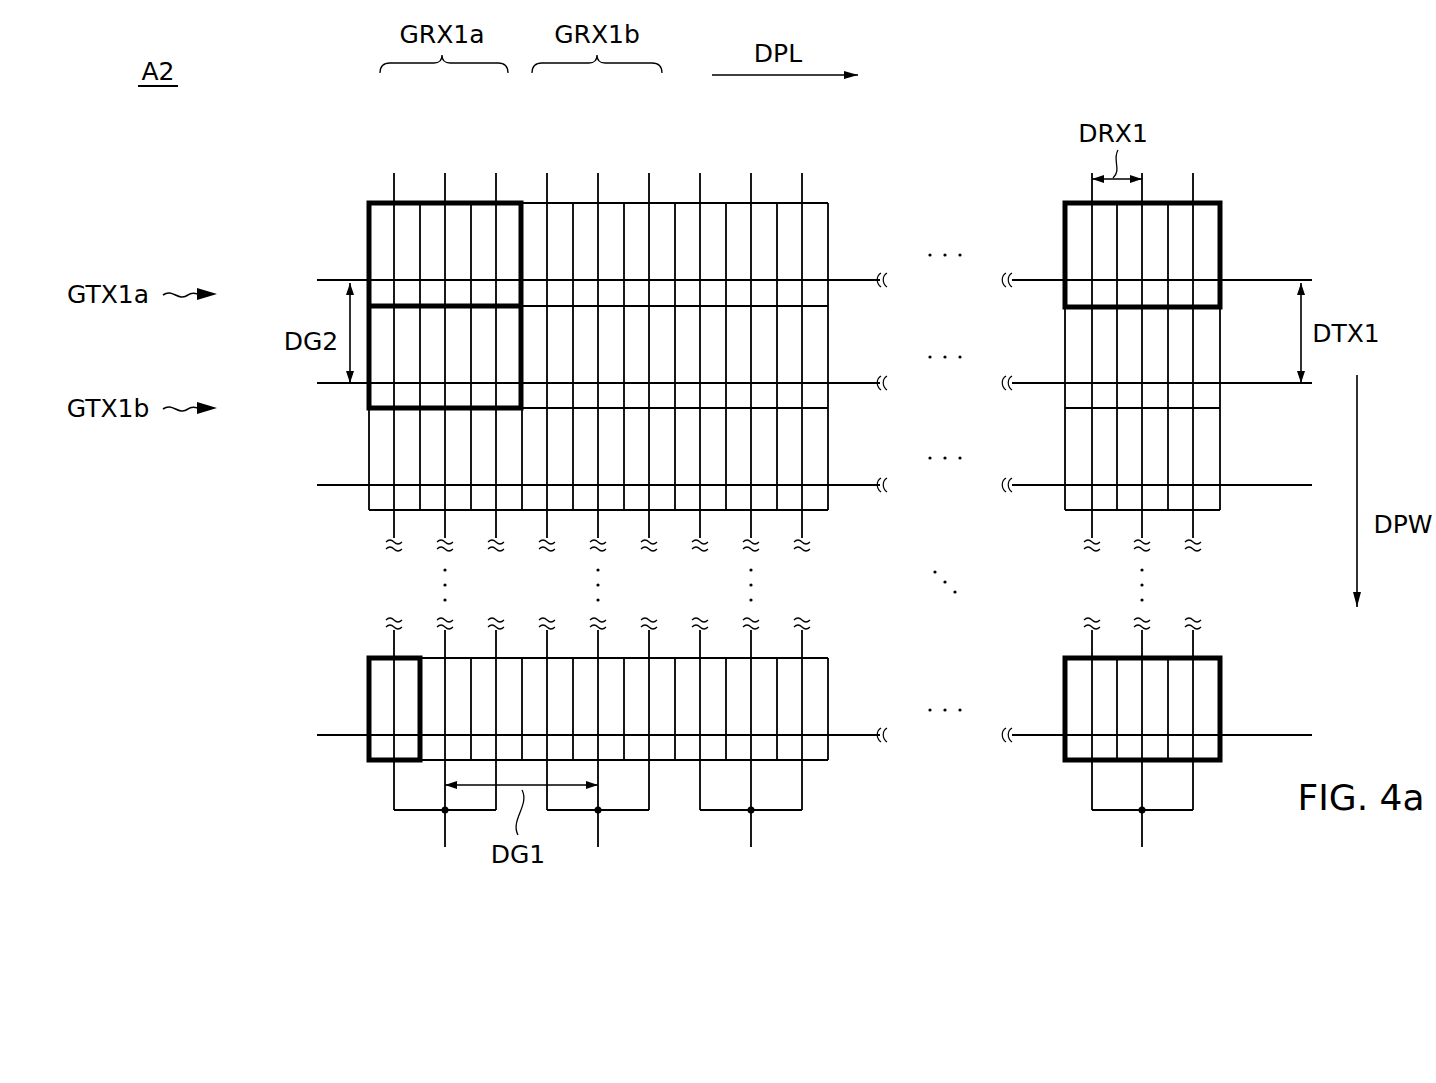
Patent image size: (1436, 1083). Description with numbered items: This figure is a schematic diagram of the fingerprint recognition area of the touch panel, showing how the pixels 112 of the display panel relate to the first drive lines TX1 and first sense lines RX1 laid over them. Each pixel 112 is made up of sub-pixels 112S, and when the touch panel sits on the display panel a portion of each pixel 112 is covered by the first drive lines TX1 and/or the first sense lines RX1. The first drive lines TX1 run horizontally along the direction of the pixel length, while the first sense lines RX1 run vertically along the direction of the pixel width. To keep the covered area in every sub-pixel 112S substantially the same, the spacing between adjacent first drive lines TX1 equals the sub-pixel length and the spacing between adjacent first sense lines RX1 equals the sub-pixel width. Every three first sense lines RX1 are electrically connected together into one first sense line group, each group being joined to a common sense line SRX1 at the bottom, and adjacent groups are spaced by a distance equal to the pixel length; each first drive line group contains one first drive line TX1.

The pixel 112 is at (369, 232).
The sub-pixel 112S is at (368, 665).
The first sense line RX1 is at (396, 178).
The first drive line TX1 is at (326, 283).
The receiving signal line SRX1 is at (442, 835).